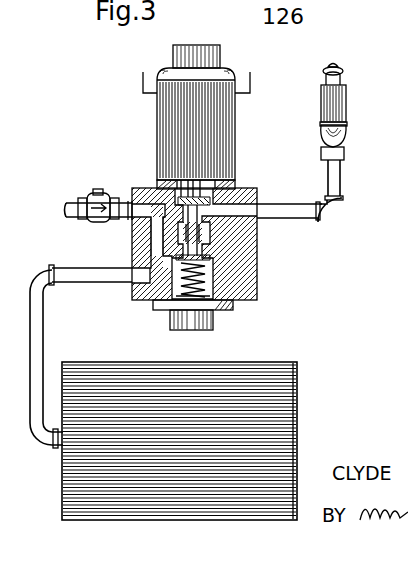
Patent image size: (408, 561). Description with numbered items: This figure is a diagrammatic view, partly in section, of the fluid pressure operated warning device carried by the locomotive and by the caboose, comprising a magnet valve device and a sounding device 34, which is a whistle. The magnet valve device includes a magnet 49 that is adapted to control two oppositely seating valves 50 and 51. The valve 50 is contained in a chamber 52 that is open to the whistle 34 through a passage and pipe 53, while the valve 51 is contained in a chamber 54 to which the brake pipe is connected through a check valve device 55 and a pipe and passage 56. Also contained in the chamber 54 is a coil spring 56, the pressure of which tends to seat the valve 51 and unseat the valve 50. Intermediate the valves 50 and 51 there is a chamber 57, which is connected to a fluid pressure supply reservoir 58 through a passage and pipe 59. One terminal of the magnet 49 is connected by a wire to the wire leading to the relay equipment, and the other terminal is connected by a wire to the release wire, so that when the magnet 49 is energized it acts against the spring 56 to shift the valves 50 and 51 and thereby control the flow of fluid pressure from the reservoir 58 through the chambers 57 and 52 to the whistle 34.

The sounding device 34 is at (334, 109).
The magnet 49 is at (208, 138).
The valve 50 is at (236, 187).
The valve 51 is at (205, 257).
The chamber 52 is at (172, 191).
The passage and pipe 53 is at (275, 213).
The chamber 54 is at (208, 274).
The check valve device 55 is at (86, 196).
The coil spring 56 is at (128, 218).
The chamber 57 is at (212, 231).
The fluid pressure supply reservoir 58 is at (281, 422).
The passage and pipe 59 is at (123, 297).